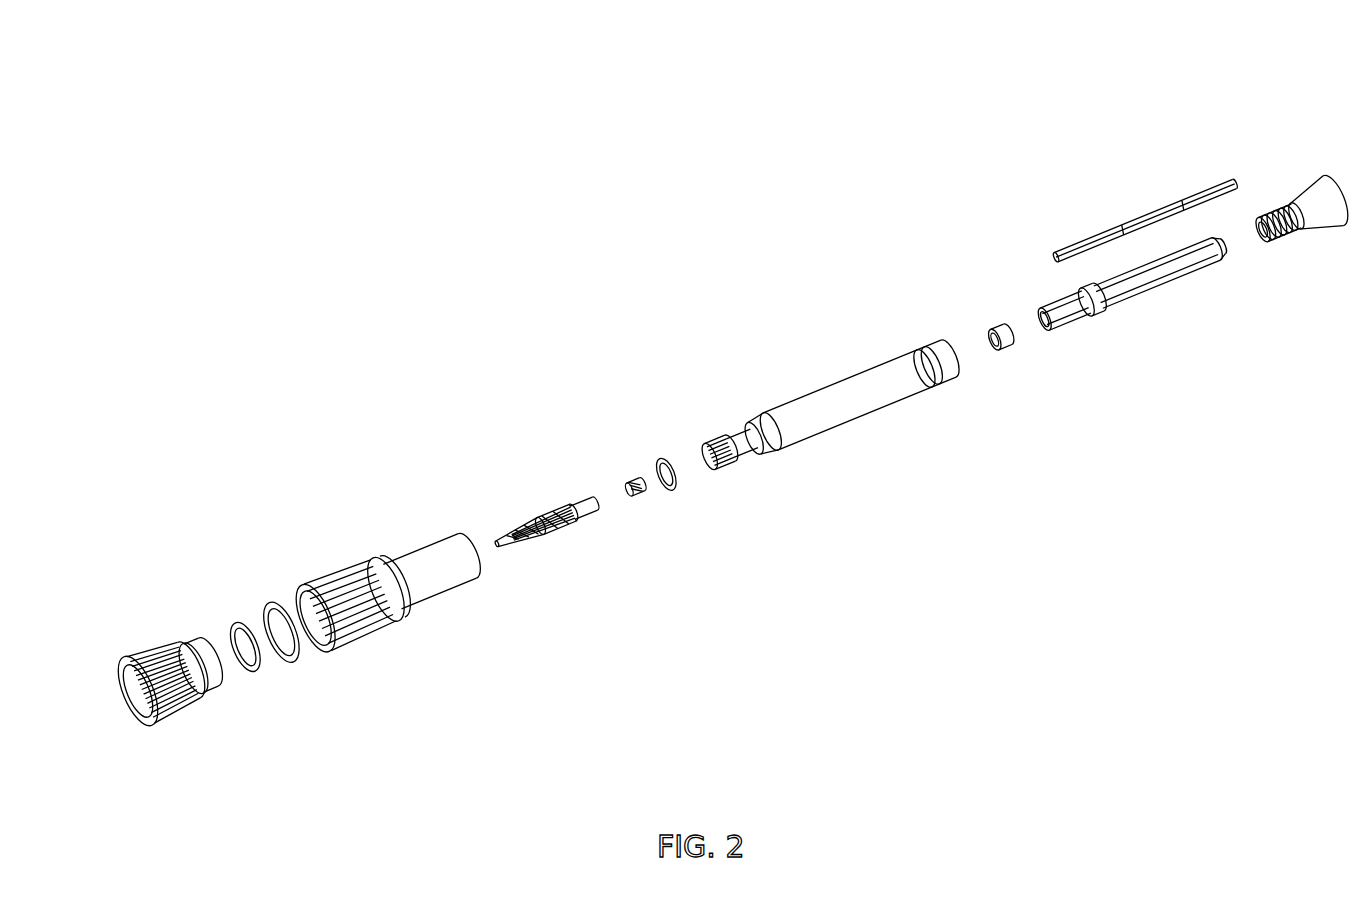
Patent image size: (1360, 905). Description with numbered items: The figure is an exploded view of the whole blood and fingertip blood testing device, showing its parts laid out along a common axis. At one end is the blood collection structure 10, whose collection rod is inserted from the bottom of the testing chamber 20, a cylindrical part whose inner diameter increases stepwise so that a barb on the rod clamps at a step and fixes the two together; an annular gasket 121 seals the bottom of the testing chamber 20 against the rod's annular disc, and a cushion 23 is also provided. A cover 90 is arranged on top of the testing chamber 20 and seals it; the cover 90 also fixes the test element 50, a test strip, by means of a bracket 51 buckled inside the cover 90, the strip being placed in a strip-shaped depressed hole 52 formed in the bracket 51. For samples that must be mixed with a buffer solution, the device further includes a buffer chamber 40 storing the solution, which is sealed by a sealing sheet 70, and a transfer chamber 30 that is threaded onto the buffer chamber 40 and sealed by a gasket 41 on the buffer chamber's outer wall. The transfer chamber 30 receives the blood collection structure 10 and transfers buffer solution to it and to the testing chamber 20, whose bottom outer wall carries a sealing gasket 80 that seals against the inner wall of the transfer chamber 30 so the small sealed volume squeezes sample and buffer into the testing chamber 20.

The blood collection structure 10 is at (547, 500).
The testing chamber 20 is at (860, 402).
The cushion 23 is at (1000, 320).
The transfer chamber 30 is at (405, 573).
The buffer chamber 40 is at (164, 656).
The gasket 41 is at (280, 612).
The test element 50 is at (1193, 157).
The bracket 51 is at (1083, 320).
The depressed hole 52 is at (1177, 300).
The sealing sheet 70 is at (243, 624).
The sealing gasket 80 is at (660, 457).
The cover 90 is at (1305, 238).
The annular gasket 121 is at (636, 480).